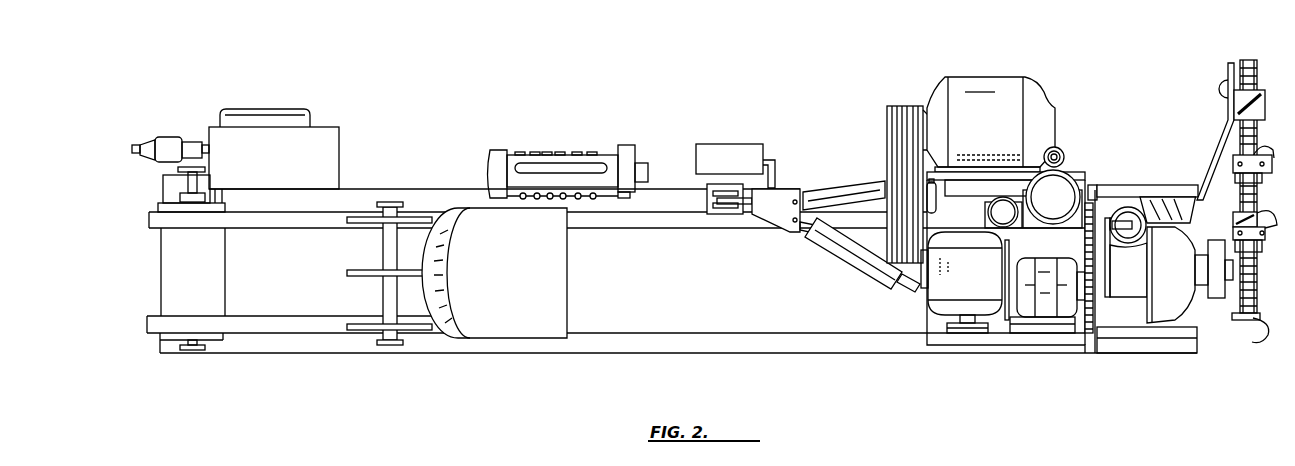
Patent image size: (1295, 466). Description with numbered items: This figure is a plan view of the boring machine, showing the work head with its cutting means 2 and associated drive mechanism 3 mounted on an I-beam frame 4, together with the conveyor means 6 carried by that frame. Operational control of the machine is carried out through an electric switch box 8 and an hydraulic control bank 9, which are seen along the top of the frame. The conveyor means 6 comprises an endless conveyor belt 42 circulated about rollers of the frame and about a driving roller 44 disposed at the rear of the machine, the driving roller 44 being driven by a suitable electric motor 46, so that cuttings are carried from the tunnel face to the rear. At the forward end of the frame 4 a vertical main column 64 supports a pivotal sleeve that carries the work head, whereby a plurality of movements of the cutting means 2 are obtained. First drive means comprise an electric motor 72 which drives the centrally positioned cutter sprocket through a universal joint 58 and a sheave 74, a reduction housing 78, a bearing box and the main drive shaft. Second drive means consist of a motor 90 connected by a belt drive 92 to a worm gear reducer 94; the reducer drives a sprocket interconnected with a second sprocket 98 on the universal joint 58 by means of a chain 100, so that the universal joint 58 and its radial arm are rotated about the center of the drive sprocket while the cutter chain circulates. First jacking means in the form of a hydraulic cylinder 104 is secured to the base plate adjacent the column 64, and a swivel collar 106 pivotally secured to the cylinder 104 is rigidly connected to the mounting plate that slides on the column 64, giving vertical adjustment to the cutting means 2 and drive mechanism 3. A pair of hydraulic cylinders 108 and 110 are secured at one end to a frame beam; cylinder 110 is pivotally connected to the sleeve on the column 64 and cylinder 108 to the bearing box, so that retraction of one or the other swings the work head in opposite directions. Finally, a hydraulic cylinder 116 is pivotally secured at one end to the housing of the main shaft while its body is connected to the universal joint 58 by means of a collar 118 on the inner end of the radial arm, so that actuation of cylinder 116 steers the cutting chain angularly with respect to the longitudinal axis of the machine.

The cutting means 2 is at (1257, 62).
The drive mechanism 3 is at (952, 55).
The I-beam frame 4 is at (594, 355).
The conveyor means 6 is at (716, 294).
The electric switch box 8 is at (725, 144).
The hydraulic control bank 9 is at (608, 155).
The endless conveyor belt 42 is at (688, 320).
The driving roller 44 is at (225, 284).
The electric motor 46 is at (284, 97).
The universal joint 58 is at (1137, 287).
The vertical main column 64 is at (1062, 205).
The electric motor 72 is at (1010, 77).
The sheave 74 is at (895, 106).
The reduction housing 78 is at (953, 207).
The motor 90 is at (928, 288).
The belt drive 92 is at (996, 334).
The worm gear reducer 94 is at (1040, 320).
The second sprocket 98 is at (1095, 348).
The chain 100 is at (1097, 190).
The hydraulic cylinder 104 is at (1004, 200).
The swivel collar 106 is at (985, 214).
The hydraulic cylinder 108 is at (832, 250).
The hydraulic cylinder 110 is at (853, 185).
The hydraulic cylinder 116 is at (1135, 212).
The collar 118 is at (1145, 228).